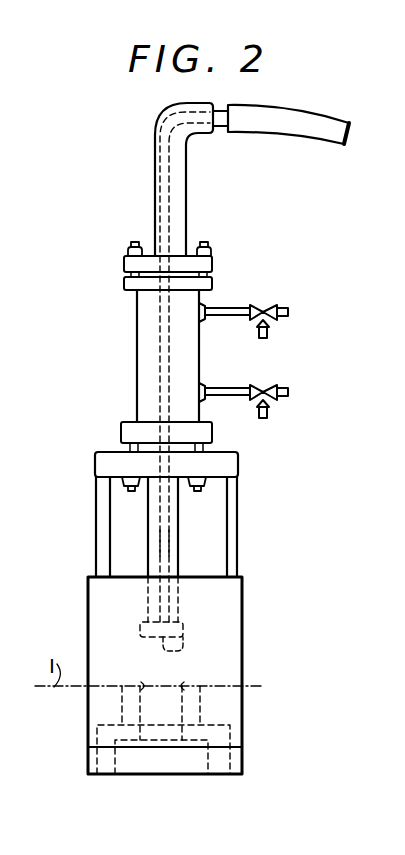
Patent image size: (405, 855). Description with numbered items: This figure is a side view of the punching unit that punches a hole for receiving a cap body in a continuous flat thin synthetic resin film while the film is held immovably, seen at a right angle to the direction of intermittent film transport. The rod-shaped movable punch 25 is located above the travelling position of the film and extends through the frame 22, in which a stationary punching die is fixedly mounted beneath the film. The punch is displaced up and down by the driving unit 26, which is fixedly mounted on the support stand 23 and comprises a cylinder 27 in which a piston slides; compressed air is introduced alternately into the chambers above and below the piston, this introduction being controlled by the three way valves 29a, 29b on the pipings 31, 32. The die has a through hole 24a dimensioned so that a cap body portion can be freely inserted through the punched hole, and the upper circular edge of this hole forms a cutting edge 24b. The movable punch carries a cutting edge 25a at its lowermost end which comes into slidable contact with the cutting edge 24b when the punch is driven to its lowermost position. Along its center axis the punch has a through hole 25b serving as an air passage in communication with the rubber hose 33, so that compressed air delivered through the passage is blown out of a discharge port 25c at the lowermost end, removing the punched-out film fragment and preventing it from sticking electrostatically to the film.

The frame 22 is at (234, 596).
The support stand 23 is at (240, 467).
The through hole 24a is at (185, 690).
The cutting edge 24b is at (143, 687).
The movable punch 25 is at (143, 527).
The cutting edge 25a is at (187, 626).
The through hole 25b is at (163, 543).
The discharge port 25c is at (182, 648).
The driving unit 26 is at (140, 362).
The cylinder 27 is at (137, 377).
The three way valve 29a is at (268, 324).
The three way valve 29b is at (268, 404).
The piping 31 is at (237, 308).
The piping 32 is at (222, 388).
The rubber hose 33 is at (331, 121).